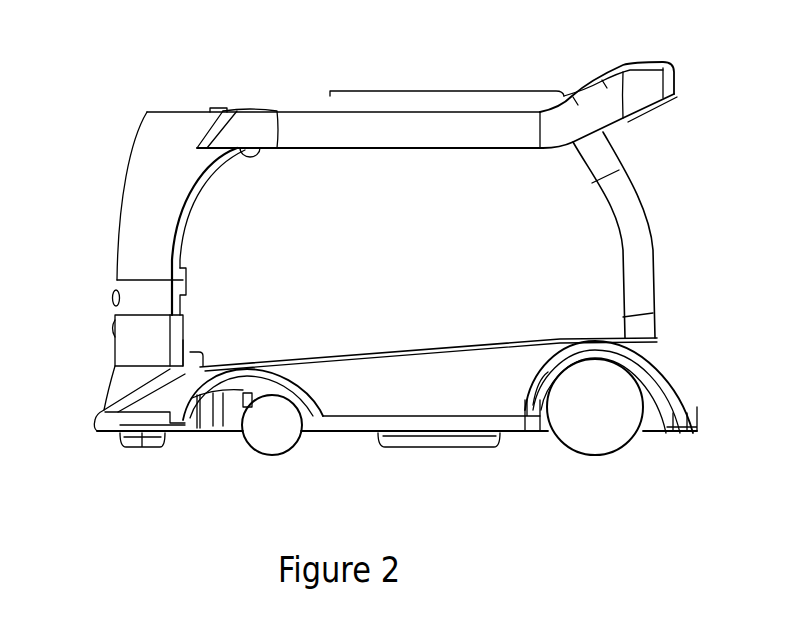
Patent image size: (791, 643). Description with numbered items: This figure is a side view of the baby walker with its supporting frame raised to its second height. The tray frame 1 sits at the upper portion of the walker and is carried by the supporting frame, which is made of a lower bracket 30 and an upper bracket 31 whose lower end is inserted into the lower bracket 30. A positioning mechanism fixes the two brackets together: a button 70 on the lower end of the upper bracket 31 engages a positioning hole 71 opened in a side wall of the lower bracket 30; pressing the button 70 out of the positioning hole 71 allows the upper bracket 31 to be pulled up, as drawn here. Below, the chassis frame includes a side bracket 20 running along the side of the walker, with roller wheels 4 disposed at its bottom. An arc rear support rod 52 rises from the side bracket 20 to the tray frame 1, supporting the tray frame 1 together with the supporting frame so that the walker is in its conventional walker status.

The tray frame 1 is at (322, 132).
The upper bracket 31 is at (140, 228).
The button 70 is at (115, 298).
The positioning hole 71 is at (115, 332).
The lower bracket 30 is at (145, 373).
The rear support rods 52 is at (643, 260).
The side bracket 20 is at (450, 385).
The roller wheels 4 is at (275, 425).